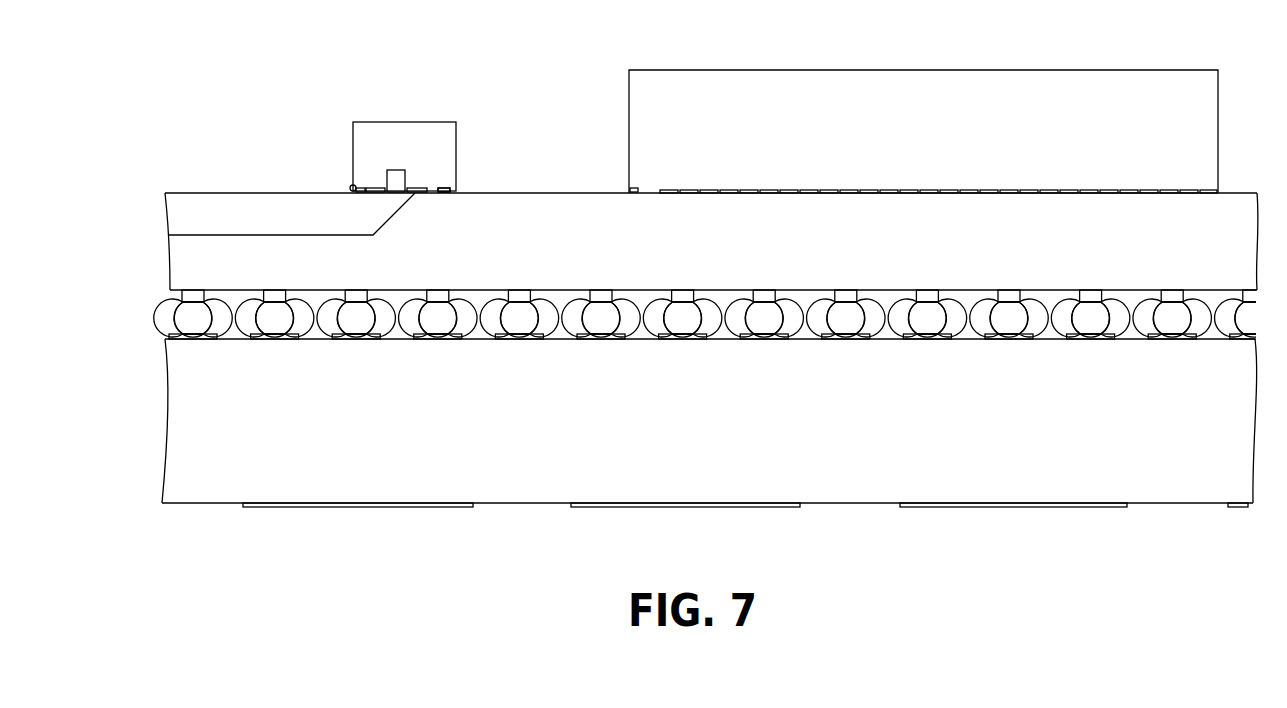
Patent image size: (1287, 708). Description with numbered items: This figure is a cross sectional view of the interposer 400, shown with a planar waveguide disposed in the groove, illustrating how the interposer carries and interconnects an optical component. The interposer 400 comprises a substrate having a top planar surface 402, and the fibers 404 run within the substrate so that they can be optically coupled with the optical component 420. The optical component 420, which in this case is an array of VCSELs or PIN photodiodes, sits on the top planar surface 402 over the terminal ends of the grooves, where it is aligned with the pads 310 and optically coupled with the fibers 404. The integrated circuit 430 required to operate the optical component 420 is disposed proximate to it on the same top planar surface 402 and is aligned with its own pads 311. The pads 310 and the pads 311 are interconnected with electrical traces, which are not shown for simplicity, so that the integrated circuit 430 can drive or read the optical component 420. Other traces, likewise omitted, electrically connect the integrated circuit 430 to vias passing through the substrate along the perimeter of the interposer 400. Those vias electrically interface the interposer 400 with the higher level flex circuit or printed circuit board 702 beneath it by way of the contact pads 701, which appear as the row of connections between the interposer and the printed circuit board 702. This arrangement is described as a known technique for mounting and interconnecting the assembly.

The interposer 400 is at (208, 128).
The top planar surface 402 is at (525, 192).
The fibers 404 is at (180, 212).
The optical component 420 is at (357, 152).
The pads 310 is at (438, 192).
The pads 311 is at (630, 192).
The integrated circuit 430 is at (981, 86).
The contact pads 701 is at (182, 318).
The printed circuit board 702 is at (188, 418).